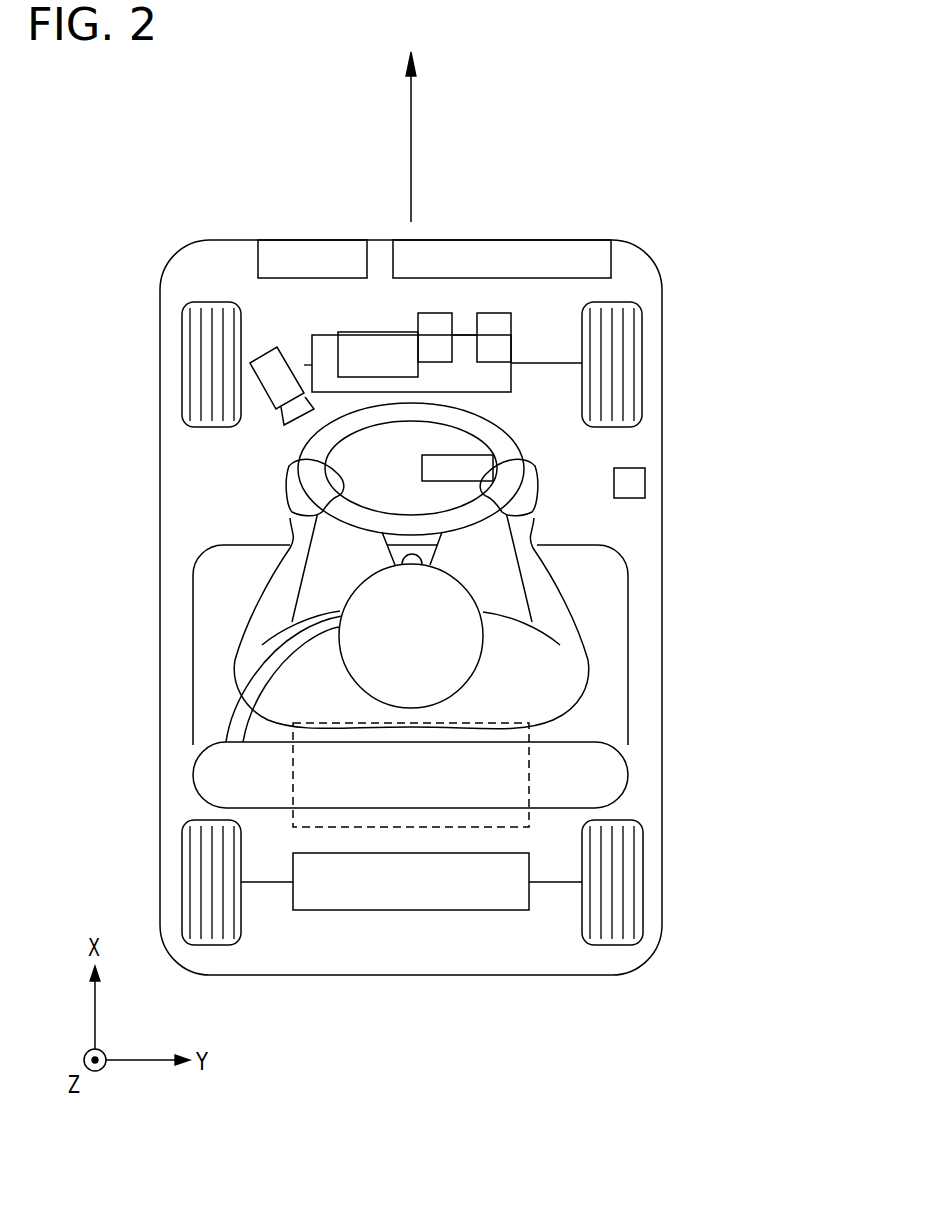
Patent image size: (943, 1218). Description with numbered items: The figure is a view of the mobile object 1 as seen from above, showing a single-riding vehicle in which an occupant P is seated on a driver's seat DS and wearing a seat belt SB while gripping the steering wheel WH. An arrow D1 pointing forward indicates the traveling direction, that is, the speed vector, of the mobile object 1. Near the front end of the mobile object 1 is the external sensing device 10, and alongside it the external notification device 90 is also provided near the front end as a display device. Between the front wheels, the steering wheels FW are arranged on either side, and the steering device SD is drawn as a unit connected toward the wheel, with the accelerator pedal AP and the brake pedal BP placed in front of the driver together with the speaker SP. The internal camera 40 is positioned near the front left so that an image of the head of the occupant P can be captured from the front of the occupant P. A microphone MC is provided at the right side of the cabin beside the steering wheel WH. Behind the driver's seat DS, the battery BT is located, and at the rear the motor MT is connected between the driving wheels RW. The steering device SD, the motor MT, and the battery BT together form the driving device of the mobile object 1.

The mobile object 1 is at (662, 608).
The external sensing device 10 is at (311, 240).
The internal camera 40 is at (260, 356).
The external notification device 90 is at (611, 258).
The brake pedal BP is at (433, 313).
The accelerator pedal AP is at (493, 313).
The steering device SD is at (512, 380).
The speaker SP is at (390, 330).
The steering wheel FW is at (642, 361).
The driving wheel RW is at (643, 880).
The motor MT is at (407, 910).
The microphone MC is at (645, 481).
The steering wheel WH is at (298, 458).
The driver's seat DS is at (193, 648).
The occupant P is at (588, 668).
The seat belt SB is at (228, 720).
The battery BT is at (529, 778).
The arrow D1 is at (426, 137).